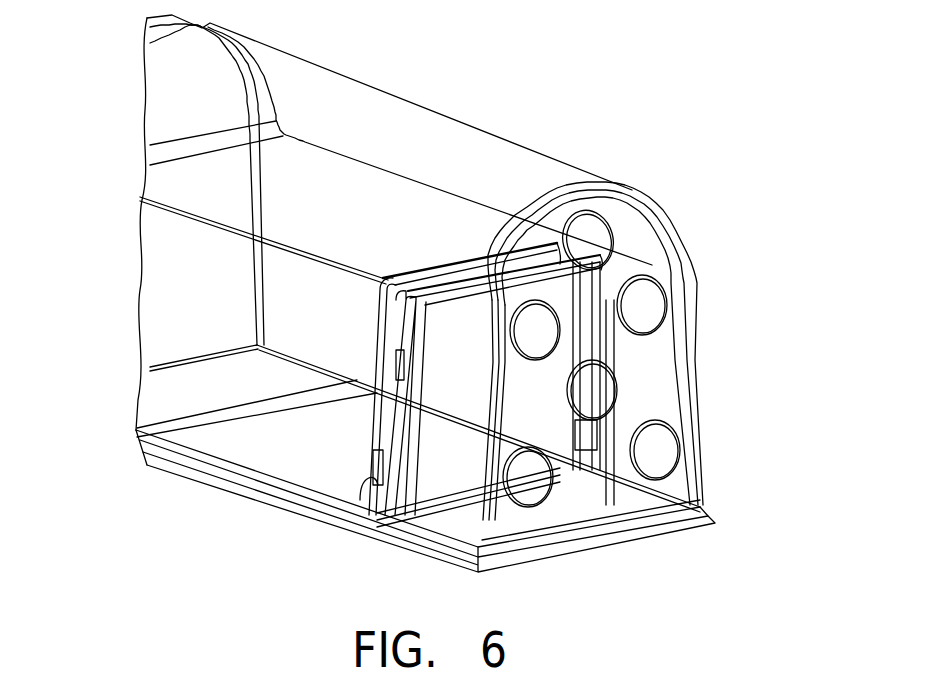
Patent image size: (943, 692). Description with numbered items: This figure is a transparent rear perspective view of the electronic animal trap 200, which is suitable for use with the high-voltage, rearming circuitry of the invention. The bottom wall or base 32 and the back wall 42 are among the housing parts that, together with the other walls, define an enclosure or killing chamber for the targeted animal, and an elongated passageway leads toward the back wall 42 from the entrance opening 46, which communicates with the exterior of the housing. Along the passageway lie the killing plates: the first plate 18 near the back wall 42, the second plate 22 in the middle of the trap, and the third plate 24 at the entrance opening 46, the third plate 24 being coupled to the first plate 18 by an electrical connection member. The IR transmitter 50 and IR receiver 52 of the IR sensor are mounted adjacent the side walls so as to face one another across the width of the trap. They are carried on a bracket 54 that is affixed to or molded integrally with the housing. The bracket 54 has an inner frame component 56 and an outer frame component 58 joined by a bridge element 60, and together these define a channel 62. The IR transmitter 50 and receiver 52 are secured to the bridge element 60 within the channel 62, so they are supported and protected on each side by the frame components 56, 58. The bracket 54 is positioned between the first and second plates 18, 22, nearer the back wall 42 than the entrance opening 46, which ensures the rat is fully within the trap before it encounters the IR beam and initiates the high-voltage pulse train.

The electronic animal trap 200 is at (654, 150).
The first plate 18 is at (597, 503).
The second plate 22 is at (281, 458).
The third plate 24 is at (168, 390).
The bottom wall or base 32 is at (178, 472).
The back wall 42 is at (667, 343).
The entrance opening 46 is at (162, 272).
The IR transmitter 50 is at (377, 470).
The IR receiver 52 is at (597, 437).
The bracket 54 is at (456, 250).
The inner frame component 56 is at (630, 253).
The outer frame component 58 is at (412, 278).
The bridge element 60 is at (606, 221).
The channel 62 is at (392, 364).